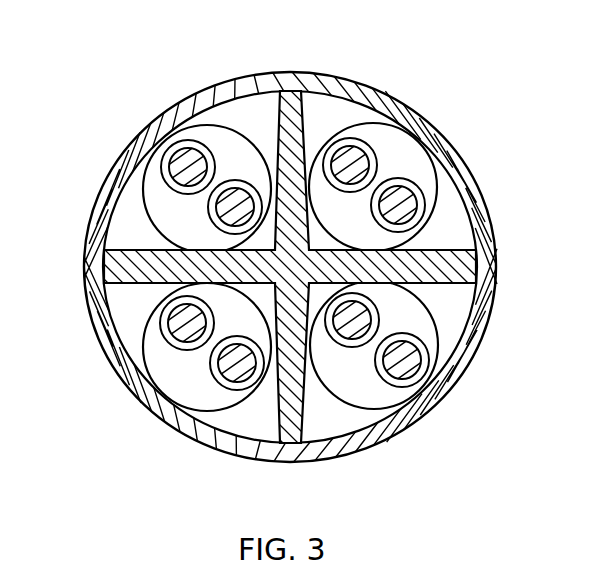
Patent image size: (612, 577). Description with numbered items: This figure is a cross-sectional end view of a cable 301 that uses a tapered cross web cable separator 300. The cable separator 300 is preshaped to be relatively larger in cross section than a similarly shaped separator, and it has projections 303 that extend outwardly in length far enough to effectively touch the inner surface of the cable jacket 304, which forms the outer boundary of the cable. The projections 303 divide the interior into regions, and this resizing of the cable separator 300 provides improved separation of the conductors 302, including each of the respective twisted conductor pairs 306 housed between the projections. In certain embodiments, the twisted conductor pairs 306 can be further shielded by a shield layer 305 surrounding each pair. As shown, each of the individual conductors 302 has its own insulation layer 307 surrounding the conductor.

The cable separator 300 is at (457, 267).
The cable 301 is at (470, 85).
The conductors 302 is at (415, 203).
The projections 303 is at (292, 92).
The cable jacket 304 is at (148, 137).
The shield layer 305 is at (222, 413).
The twisted conductor pairs 306 is at (365, 386).
The insulation layer 307 is at (352, 140).